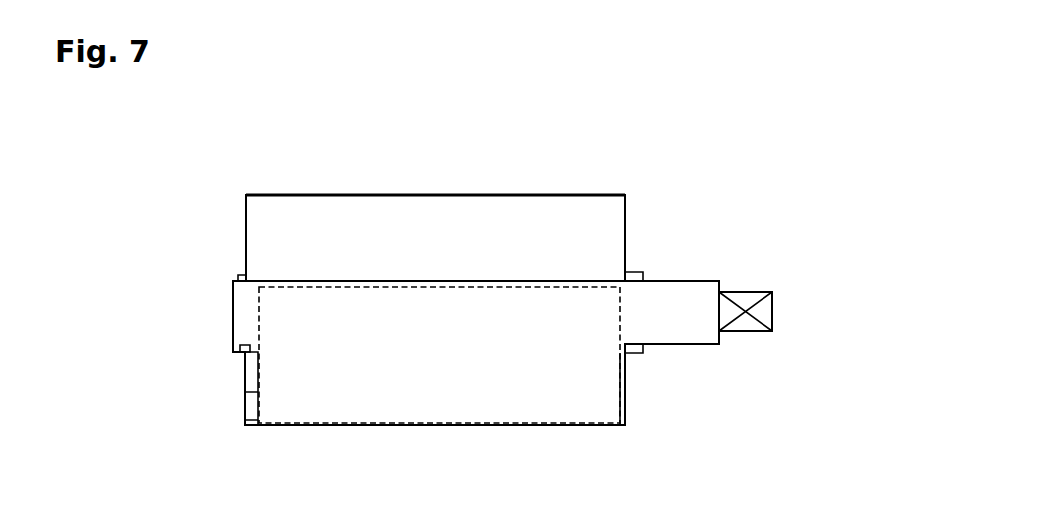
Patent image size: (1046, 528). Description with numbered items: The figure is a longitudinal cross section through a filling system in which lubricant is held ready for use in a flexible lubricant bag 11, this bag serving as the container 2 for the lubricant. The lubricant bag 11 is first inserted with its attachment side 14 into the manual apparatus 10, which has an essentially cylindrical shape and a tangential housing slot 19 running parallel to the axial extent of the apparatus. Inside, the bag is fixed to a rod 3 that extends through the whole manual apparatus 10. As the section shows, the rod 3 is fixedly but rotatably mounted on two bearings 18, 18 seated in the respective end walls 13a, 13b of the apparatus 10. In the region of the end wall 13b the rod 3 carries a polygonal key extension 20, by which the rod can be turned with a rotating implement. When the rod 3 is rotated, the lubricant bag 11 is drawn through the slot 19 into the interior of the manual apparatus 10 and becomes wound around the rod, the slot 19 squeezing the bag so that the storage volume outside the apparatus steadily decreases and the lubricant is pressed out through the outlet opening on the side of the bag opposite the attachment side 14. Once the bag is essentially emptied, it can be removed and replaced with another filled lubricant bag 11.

The container 2 is at (598, 377).
The rod 3 is at (785, 337).
The manual apparatus 10 is at (352, 212).
The lubricant bag 11 is at (415, 388).
The end wall 13a is at (245, 222).
The end wall 13b is at (627, 205).
The attachment side 14 is at (487, 290).
The bearing 18 is at (240, 277).
The housing slot 19 is at (253, 430).
The polygonal key extension 20 is at (753, 291).